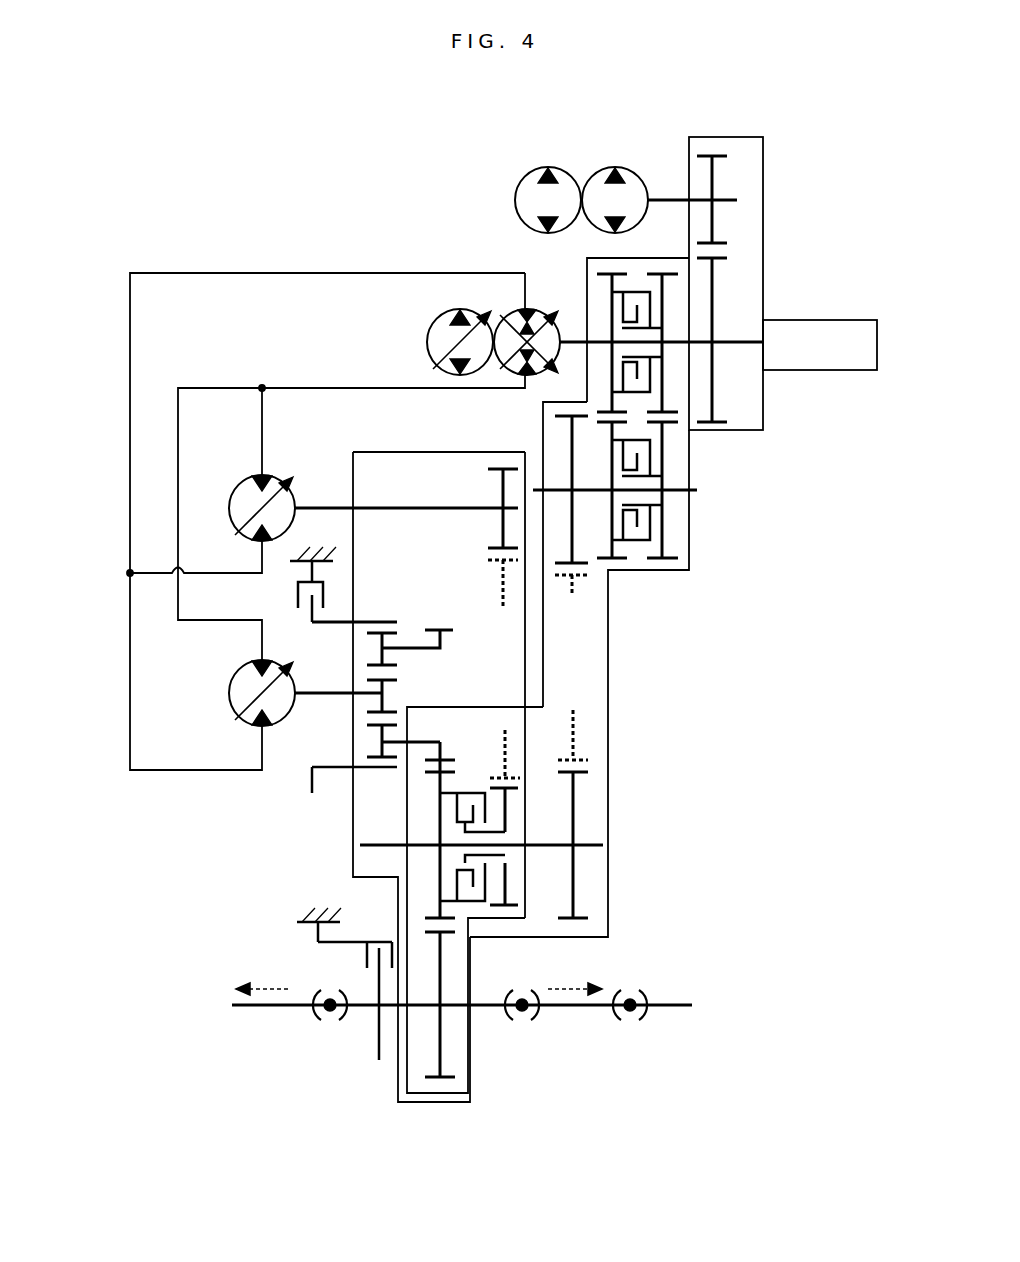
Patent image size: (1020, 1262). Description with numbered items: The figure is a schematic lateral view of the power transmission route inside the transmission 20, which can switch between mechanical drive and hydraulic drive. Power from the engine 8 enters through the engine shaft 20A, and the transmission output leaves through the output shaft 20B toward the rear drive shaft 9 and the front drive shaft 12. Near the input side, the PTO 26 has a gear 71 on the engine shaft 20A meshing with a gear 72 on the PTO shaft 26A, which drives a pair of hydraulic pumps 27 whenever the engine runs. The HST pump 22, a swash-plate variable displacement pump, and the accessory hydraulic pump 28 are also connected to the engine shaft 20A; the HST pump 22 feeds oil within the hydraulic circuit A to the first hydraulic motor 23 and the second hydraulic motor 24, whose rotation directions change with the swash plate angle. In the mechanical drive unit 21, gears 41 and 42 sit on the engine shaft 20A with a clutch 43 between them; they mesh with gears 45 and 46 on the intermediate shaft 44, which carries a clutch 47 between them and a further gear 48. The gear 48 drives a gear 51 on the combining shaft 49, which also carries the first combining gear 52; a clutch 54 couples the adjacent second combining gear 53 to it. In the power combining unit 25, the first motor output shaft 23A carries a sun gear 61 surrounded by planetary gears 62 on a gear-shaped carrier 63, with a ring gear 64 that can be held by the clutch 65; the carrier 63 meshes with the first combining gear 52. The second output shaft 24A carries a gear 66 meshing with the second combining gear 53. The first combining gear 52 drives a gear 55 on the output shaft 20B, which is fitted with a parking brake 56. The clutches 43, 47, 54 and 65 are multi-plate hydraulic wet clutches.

The transmission 20 is at (410, 150).
The hydraulic circuit A is at (248, 262).
The hydraulic pumps 27 is at (563, 178).
The power take-off device (PTO) 26 is at (753, 206).
The PTO shaft 26A is at (672, 203).
The gear 72 is at (718, 152).
The gear 71 is at (723, 432).
The engine 8 is at (820, 330).
The engine shaft 20A is at (745, 344).
The accessory hydraulic pump 28 is at (432, 333).
The HST pump 22 is at (540, 312).
The clutch 43 is at (637, 292).
The intermediate shaft 44 is at (677, 492).
The gear 42 is at (585, 395).
The gear 45 is at (676, 568).
The clutch 47 is at (639, 562).
The gear 46 is at (618, 565).
The gear 41 is at (692, 433).
The gear 48 is at (572, 438).
The gear 51 is at (578, 592).
The mechanical drive unit 21 is at (612, 690).
The second hydraulic motor 24 is at (248, 478).
The second output shaft 24A is at (322, 505).
The first hydraulic motor 23 is at (240, 697).
The first motor output shaft 23A is at (313, 702).
The power combining unit 25 is at (380, 450).
The gear 66 is at (497, 487).
The clutch 65 is at (323, 592).
The ring gear 64 is at (382, 620).
The planetary gears 62 is at (365, 641).
The carrier 63 is at (453, 628).
The sun gear 61 is at (388, 687).
The second combining gear 53 is at (500, 578).
The clutch 54 is at (457, 810).
The first combining gear 52 is at (440, 857).
The combining shaft 49 is at (593, 850).
The gear 55 is at (442, 975).
The parking brake 56 is at (367, 955).
The output shaft 20B is at (487, 1008).
The front drive shaft 12 is at (270, 1008).
The rear drive shaft 9 is at (588, 1008).